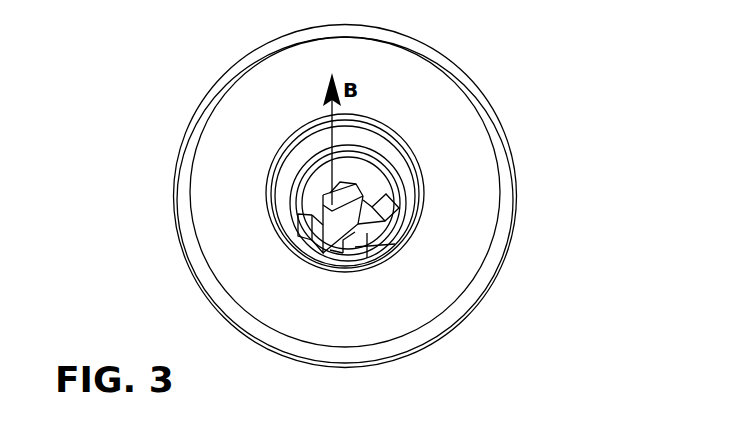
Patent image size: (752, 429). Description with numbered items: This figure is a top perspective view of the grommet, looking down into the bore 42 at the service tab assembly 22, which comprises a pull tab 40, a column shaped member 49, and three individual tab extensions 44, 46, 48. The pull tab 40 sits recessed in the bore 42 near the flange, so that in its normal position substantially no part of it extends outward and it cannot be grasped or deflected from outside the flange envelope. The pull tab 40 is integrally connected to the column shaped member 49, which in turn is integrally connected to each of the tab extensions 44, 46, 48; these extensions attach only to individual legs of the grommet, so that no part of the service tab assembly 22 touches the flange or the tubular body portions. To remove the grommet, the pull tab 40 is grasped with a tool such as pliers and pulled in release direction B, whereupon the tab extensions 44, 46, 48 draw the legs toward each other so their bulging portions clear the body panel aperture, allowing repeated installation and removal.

The service tab assembly 22 is at (318, 191).
The pull tab 40 is at (307, 206).
The bore 42 is at (302, 200).
The tab extension 44 is at (355, 247).
The tab extension 46 is at (392, 220).
The tab extension 48 is at (300, 216).
The column shaped member 49 is at (370, 228).